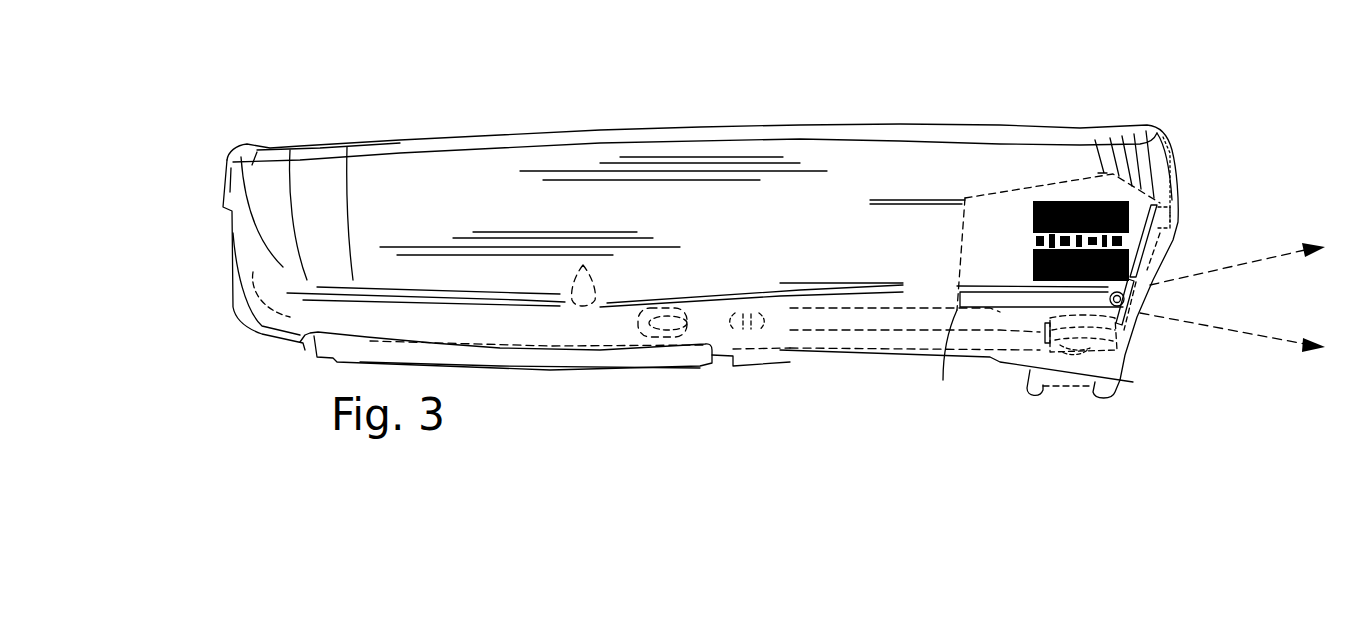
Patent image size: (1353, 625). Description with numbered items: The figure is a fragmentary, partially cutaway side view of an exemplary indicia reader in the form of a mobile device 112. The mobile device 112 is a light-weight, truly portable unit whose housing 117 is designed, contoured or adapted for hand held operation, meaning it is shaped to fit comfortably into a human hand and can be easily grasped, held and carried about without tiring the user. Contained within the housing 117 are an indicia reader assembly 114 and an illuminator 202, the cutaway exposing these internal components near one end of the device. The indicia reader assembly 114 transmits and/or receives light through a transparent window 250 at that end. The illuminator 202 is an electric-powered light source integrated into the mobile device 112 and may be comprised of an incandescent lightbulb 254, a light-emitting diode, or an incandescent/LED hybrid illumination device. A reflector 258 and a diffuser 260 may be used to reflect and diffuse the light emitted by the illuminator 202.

The mobile device 112 is at (1078, 66).
The housing 117 is at (432, 162).
The indicia reader assembly 114 is at (1000, 253).
The transparent window 250 is at (1157, 236).
The diffuser 260 is at (1150, 290).
The incandescent lightbulb 254 is at (1127, 305).
The illuminator 202 is at (950, 313).
The reflector 258 is at (1112, 304).